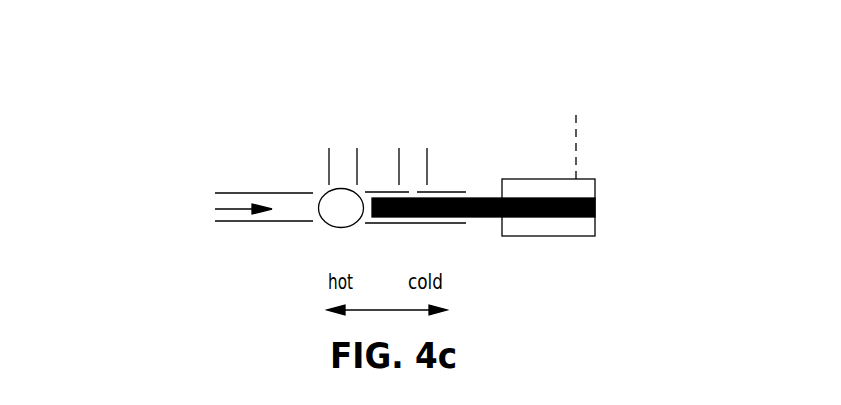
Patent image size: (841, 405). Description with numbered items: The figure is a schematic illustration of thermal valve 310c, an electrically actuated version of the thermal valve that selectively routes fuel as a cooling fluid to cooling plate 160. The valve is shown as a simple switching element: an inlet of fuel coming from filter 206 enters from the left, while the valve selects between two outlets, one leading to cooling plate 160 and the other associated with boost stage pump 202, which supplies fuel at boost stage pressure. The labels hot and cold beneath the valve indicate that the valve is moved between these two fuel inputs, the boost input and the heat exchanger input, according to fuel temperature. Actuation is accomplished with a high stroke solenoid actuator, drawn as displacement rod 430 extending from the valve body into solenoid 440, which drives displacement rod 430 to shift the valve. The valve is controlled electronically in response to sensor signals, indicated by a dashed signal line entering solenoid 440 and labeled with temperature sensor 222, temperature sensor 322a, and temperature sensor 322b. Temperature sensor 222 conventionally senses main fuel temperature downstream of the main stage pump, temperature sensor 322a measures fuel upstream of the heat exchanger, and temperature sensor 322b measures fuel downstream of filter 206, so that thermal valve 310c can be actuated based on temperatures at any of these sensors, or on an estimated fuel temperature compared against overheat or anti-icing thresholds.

The filter 206 is at (244, 207).
The cooling plate 160 is at (341, 133).
The boost stage pump 202 is at (413, 116).
The thermal valve 310c is at (563, 72).
The displacement rod 430 is at (475, 197).
The solenoid 440 is at (563, 227).
The temperature sensor 222 is at (604, 134).
The temperature sensor 322a is at (604, 134).
The temperature sensor 322b is at (604, 134).